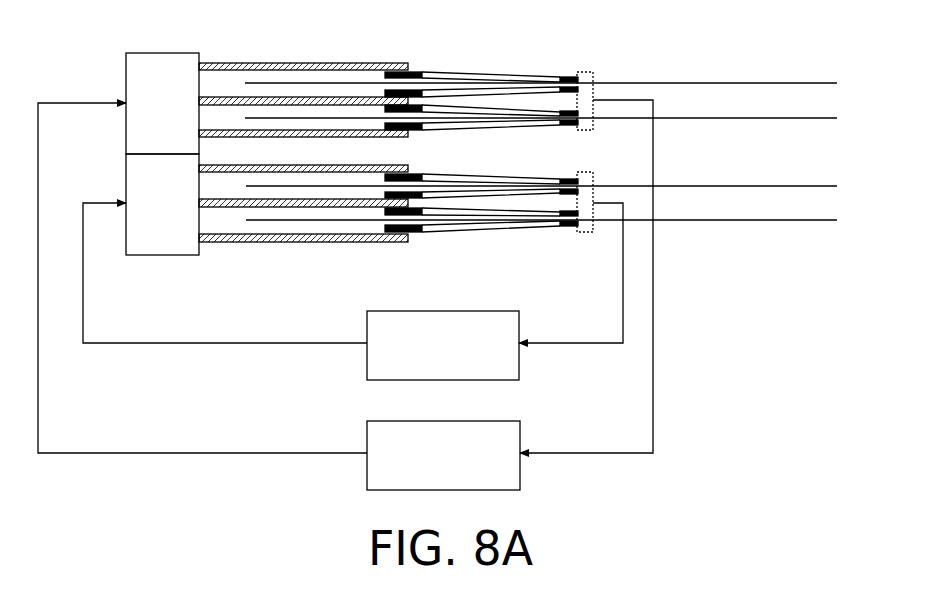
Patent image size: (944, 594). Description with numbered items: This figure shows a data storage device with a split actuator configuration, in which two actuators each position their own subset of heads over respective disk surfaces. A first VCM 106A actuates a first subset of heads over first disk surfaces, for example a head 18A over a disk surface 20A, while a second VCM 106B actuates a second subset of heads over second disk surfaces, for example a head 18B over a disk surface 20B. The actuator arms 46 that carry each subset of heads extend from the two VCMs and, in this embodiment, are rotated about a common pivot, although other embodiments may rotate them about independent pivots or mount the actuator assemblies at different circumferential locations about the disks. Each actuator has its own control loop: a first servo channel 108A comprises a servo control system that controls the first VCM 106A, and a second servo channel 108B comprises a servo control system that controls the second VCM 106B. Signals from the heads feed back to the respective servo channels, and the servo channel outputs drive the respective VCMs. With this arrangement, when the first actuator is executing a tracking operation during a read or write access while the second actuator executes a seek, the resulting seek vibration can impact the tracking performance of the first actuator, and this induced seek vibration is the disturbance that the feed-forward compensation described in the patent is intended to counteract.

The first VCM 106A is at (126, 59).
The second VCM 106B is at (126, 162).
The actuator arms 46 is at (283, 62).
The head 18A is at (566, 74).
The head 18B is at (566, 176).
The disk surface 20A is at (829, 80).
The disk surface 20B is at (826, 183).
The first servo channel 108A is at (367, 427).
The second servo channel 108B is at (367, 316).